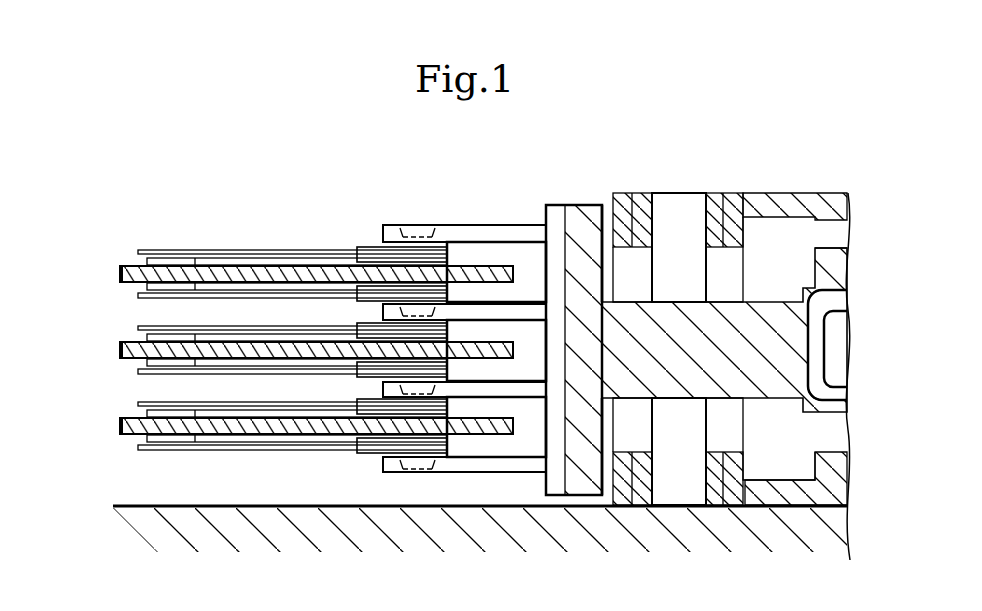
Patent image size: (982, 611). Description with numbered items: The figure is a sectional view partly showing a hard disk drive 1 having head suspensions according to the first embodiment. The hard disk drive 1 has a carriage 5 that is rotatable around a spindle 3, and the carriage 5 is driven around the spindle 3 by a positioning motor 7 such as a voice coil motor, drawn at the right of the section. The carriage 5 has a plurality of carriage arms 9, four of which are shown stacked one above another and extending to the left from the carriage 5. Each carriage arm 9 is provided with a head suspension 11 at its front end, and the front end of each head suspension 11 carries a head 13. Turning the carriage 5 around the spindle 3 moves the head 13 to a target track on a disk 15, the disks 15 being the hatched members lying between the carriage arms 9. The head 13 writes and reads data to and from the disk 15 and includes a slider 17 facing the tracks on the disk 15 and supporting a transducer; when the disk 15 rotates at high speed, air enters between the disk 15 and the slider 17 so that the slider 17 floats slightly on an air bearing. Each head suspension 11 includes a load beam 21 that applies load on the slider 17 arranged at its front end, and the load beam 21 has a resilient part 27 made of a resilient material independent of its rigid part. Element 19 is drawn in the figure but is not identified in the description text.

The hard disk drive 1 is at (714, 162).
The spindle 3 is at (681, 200).
The carriage 5 is at (584, 201).
The positioning motor 7 is at (828, 188).
The carriage arm 9 is at (523, 302).
The head suspension 11 is at (246, 322).
The head 13 is at (106, 335).
The disk 15 is at (462, 332).
The slider 17 is at (163, 283).
The bracket 19 is at (378, 247).
The load beam 21 is at (228, 246).
The resilient part 27 is at (350, 250).